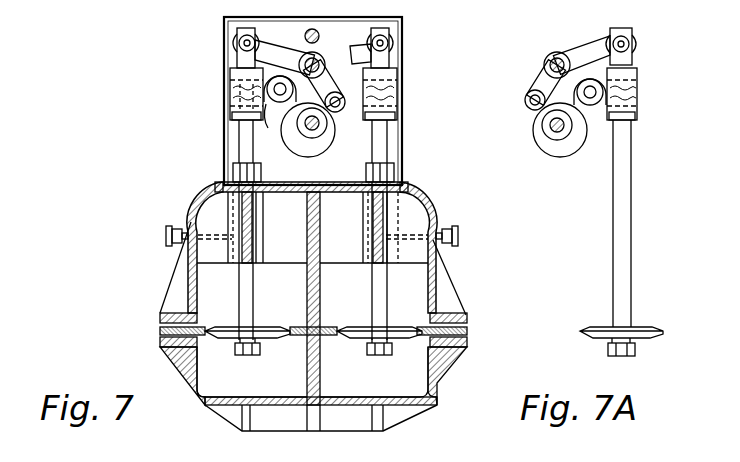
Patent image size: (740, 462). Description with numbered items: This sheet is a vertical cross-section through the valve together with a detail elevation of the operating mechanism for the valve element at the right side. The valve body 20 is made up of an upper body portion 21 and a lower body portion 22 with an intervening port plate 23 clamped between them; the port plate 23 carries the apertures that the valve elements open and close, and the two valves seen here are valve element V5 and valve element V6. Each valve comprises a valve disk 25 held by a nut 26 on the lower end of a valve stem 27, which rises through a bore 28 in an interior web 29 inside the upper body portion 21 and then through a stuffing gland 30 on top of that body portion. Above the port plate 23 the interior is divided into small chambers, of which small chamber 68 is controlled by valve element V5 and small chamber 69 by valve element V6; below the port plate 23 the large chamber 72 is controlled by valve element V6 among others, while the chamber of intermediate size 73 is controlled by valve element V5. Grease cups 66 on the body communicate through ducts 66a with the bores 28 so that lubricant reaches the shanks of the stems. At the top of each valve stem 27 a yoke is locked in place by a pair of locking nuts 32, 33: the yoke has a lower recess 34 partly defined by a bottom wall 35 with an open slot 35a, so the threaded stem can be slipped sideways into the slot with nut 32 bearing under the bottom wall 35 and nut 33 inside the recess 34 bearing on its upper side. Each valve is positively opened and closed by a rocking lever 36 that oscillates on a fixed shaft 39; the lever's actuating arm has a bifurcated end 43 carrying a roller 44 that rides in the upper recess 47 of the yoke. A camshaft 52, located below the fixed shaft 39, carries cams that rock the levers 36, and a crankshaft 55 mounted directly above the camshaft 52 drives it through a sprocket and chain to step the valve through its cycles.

In FIG. 7, the valve body 20 is at (164, 283).
In FIG. 7, the upper body portion 21 is at (186, 267).
In FIG. 7, the lower body portion 22 is at (184, 350).
In FIG. 7, the port plate 23 is at (332, 312).
In FIG. 7, the valve disk 25 is at (252, 324).
In FIG. 7, the nut 26 is at (261, 350).
In FIG. 7, the valve stem 27 is at (239, 143).
In FIG. 7, the bore 28 is at (262, 236).
In FIG. 7, the interior web 29 is at (312, 250).
In FIG. 7, the stuffing gland 30 is at (238, 172).
In FIG. 7, the locking nut 32 is at (240, 116).
In FIG. 7, the locking nut 33 is at (232, 90).
In FIG. 7, the lower recess 34 is at (231, 74).
In FIG. 7, the bottom wall 35 is at (276, 125).
In FIG. 7, the open slot 35a is at (232, 106).
In FIG. 7, the rocking lever 36 is at (338, 42).
In FIG. 7, the fixed shaft 39 is at (320, 68).
In FIG. 7A, the fixed shaft 39 is at (550, 60).
In FIG. 7, the bifurcated end 43 is at (272, 52).
In FIG. 7, the roller 44 is at (240, 48).
In FIG. 7, the upper recess 47 is at (237, 34).
In FIG. 7, the camshaft 52 is at (320, 127).
In FIG. 7A, the camshaft 52 is at (550, 130).
In FIG. 7, the crankshaft 55 is at (313, 29).
In FIG. 7, the grease cup 66 is at (166, 236).
In FIG. 7, the duct 66a is at (206, 237).
In FIG. 7, the small chamber 68 is at (210, 284).
In FIG. 7, the small chamber 69 is at (410, 282).
In FIG. 7, the large chamber 72 is at (409, 375).
In FIG. 7, the chamber of intermediate size 73 is at (312, 372).
In FIG. 7, the valve element V5 is at (246, 360).
In FIG. 7, the valve element V6 is at (380, 360).
In FIG. 7A, the valve element V6 is at (606, 312).